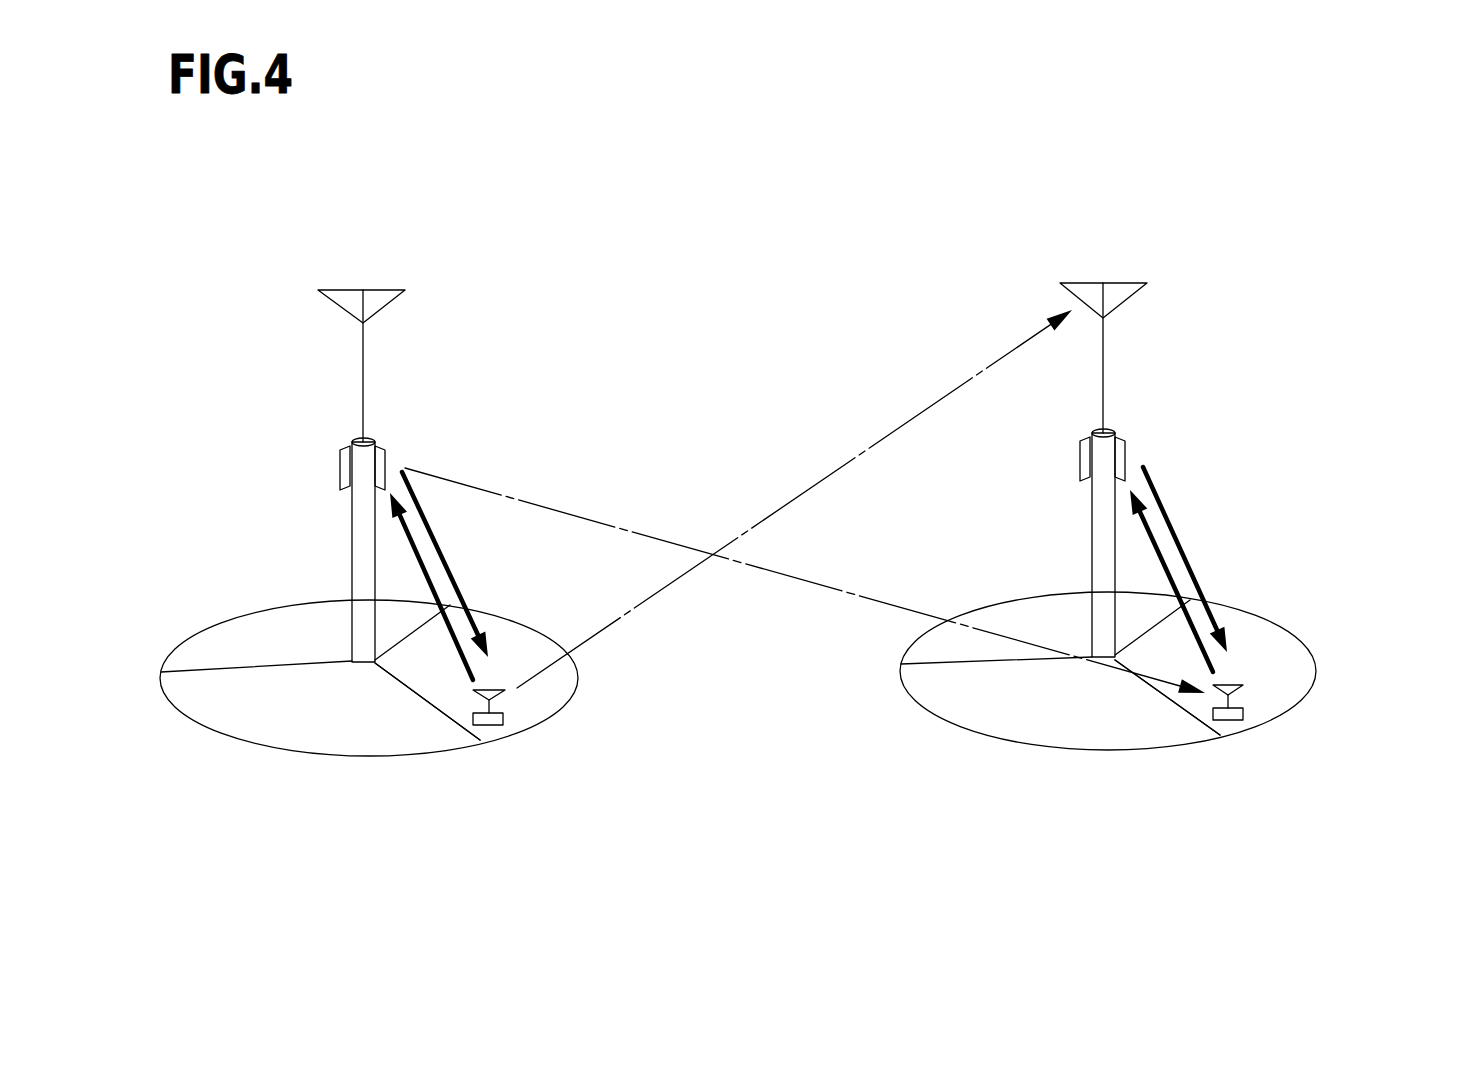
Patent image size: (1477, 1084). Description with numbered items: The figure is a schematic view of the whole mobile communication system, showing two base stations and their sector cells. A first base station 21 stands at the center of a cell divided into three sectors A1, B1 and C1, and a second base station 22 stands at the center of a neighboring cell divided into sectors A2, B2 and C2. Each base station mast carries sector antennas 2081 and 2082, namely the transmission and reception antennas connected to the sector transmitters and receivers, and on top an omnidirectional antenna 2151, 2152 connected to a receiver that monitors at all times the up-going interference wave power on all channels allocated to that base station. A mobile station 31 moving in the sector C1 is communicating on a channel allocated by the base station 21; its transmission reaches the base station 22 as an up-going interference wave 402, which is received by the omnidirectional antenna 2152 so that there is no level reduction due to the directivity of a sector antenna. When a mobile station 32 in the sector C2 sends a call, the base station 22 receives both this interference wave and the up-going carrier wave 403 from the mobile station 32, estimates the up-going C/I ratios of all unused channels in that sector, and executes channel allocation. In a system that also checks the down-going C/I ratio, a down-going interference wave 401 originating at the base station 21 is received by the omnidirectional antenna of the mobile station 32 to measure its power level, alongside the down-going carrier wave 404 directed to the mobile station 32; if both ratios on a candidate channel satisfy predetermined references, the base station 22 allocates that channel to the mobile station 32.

The omnidirectional antenna 2151 is at (363, 290).
The omnidirectional antenna 2152 is at (1110, 283).
The sector antennas 2081 is at (485, 417).
The sector antennas 2082 is at (1225, 409).
The base station 21 is at (387, 408).
The base station 22 is at (1127, 402).
The mobile station 31 is at (505, 720).
The mobile station 32 is at (1243, 716).
The down-going interference wave 401 is at (790, 578).
The up-going interference wave 402 is at (928, 404).
The up-going carrier wave 403 is at (1167, 568).
The down-going carrier wave 404 is at (1157, 487).
The sector A1 is at (205, 645).
The sector B1 is at (303, 742).
The sector C1 is at (572, 681).
The sector A2 is at (993, 620).
The sector B2 is at (1043, 742).
The sector C2 is at (1312, 675).